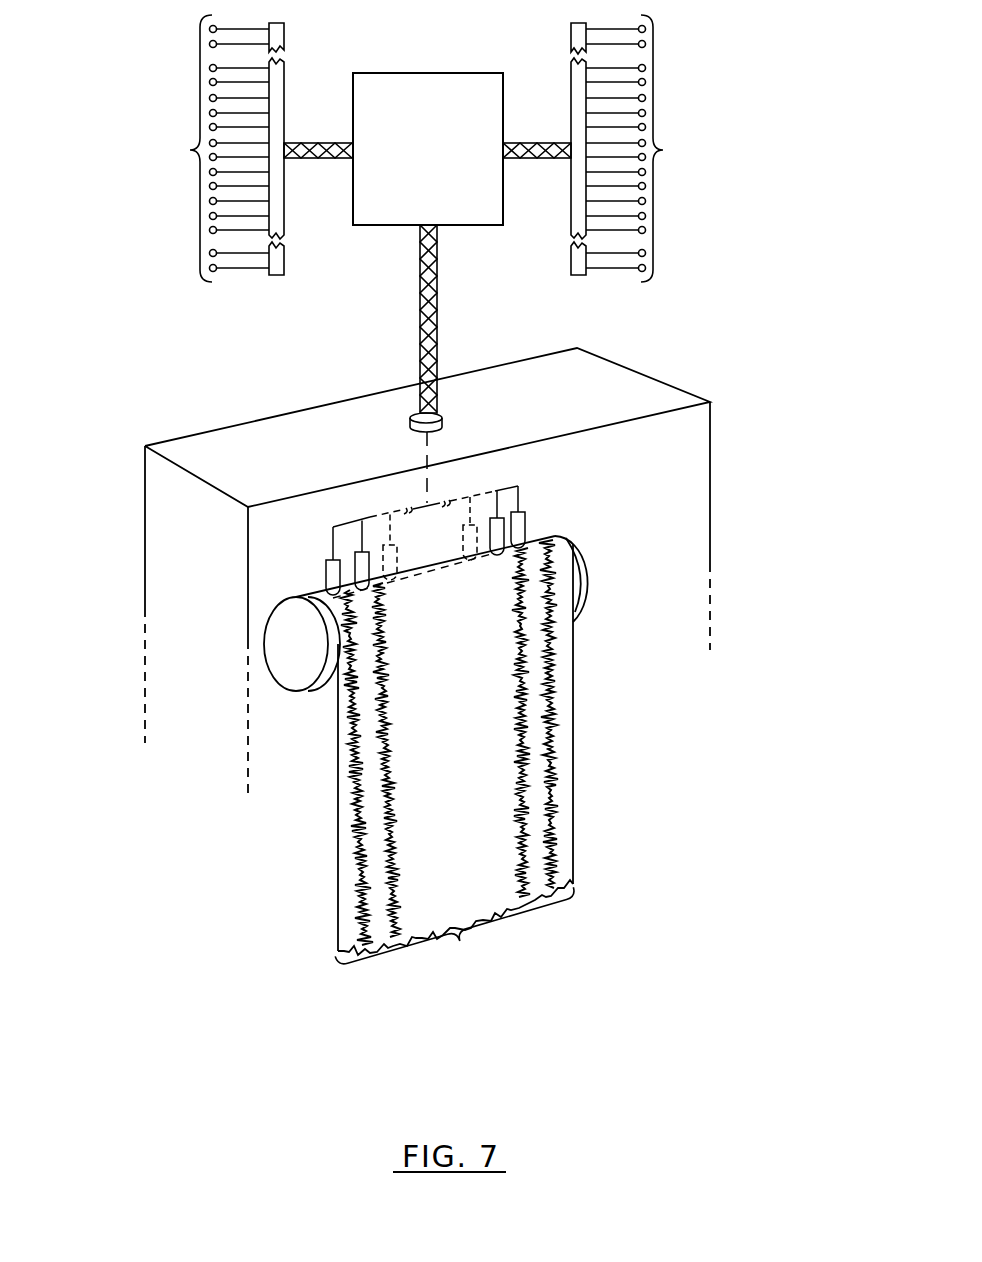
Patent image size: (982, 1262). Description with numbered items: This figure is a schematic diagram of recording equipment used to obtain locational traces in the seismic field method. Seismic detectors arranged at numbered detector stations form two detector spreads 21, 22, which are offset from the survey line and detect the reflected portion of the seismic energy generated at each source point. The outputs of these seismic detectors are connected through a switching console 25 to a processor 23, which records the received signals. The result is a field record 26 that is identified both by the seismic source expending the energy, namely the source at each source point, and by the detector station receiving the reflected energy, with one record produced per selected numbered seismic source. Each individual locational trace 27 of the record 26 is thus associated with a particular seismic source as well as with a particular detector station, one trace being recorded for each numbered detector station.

The detector spread 21 is at (167, 148).
The detector spread 22 is at (688, 148).
The processor 23 is at (710, 477).
The switching console 25 is at (428, 72).
The field record 26 is at (480, 823).
The locational trace 27 is at (395, 740).